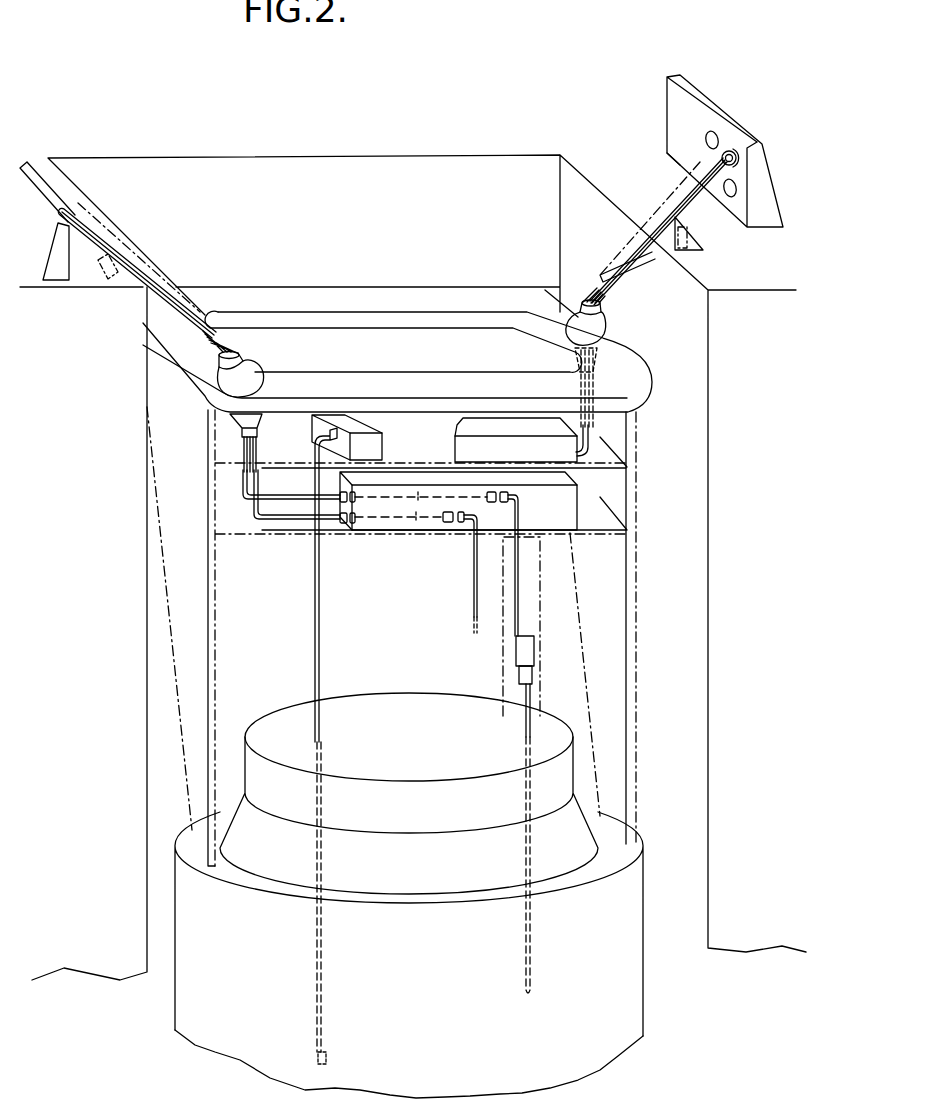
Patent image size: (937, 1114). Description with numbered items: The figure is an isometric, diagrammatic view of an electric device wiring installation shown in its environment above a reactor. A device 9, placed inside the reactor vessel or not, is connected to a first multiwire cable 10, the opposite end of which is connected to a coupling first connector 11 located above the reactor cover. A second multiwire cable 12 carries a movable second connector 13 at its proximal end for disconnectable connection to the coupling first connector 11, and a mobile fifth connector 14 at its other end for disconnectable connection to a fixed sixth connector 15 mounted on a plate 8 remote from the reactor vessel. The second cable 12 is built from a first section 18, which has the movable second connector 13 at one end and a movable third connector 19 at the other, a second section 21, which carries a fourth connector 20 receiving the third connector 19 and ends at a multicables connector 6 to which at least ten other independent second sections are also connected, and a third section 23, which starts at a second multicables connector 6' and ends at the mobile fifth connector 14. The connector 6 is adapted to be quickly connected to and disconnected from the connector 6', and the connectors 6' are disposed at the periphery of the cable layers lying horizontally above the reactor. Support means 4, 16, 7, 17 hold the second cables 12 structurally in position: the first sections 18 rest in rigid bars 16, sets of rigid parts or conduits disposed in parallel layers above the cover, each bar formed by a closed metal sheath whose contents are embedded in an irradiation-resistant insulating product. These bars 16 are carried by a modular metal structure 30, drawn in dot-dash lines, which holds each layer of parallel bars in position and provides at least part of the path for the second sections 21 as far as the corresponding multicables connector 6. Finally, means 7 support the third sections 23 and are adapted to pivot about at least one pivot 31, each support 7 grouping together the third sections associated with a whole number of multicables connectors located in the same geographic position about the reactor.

The support means 4 is at (530, 572).
The multicables connector 6 is at (387, 405).
The second multicables connector 6' is at (372, 344).
The means for supporting the third sections 7 is at (632, 236).
The plate 8 is at (680, 108).
The device 9 is at (318, 1052).
The first multiwire cable 10 is at (515, 590).
The coupling first connector 11 is at (503, 492).
The second multiwire cable 12 is at (647, 439).
The movable second connector 13 is at (490, 492).
The mobile fifth connector 14 is at (667, 153).
The fixed sixth connector 15 is at (733, 150).
The rigid bar 16 is at (553, 447).
The support means 17 is at (548, 387).
The first section 18 is at (416, 522).
The movable third connector 19 is at (357, 523).
The fourth connector 20 is at (349, 488).
The second section 21 is at (279, 501).
The third section 23 is at (633, 264).
The modular metal structure 30 is at (612, 637).
The pivot 31 is at (110, 282).